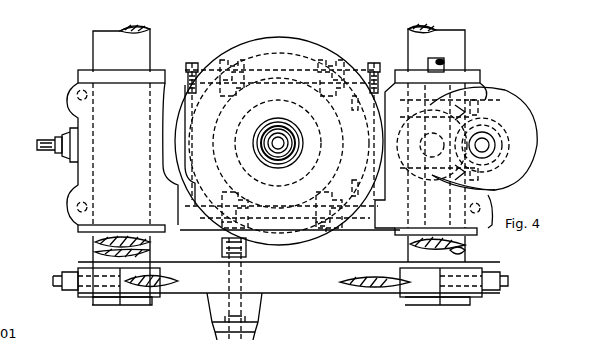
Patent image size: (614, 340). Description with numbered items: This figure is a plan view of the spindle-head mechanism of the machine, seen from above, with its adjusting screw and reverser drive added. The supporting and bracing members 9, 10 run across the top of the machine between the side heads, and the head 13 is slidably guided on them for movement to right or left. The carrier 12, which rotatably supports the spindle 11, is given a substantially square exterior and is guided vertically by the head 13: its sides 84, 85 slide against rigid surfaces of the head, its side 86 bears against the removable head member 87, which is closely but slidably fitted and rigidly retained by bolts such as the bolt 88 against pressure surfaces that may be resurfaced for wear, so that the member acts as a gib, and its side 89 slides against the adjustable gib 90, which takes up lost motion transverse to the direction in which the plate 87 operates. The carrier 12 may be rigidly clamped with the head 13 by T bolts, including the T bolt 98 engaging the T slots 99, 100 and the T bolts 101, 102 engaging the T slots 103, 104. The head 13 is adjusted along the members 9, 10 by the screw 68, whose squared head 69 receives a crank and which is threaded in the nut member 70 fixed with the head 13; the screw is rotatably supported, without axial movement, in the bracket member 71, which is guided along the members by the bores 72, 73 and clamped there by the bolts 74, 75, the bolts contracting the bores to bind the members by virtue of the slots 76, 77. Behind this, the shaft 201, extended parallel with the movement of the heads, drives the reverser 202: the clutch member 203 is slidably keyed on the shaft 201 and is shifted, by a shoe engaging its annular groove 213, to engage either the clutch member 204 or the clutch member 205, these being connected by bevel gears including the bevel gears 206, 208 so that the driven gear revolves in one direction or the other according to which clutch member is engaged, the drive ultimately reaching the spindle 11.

The supporting and bracing member 9 is at (93, 243).
The supporting and bracing member 10 is at (466, 243).
The spindle 11 is at (268, 150).
The carrier 12 is at (277, 93).
The head 13 is at (176, 231).
The screw 68 is at (241, 281).
The squared head 69 is at (213, 335).
The nut member 70 is at (222, 246).
The bracket member 71 is at (322, 294).
The bore 72 is at (165, 277).
The bore 73 is at (405, 280).
The bolt 74 is at (58, 282).
The bolt 75 is at (502, 285).
The slot 76 is at (121, 306).
The slot 77 is at (441, 306).
The side of carrier 84 is at (277, 212).
The side of carrier 85 is at (200, 190).
The side of carrier 86 is at (342, 80).
The removable head member 87 is at (278, 72).
The bolt 88 is at (193, 63).
The side of carrier 89 is at (355, 195).
The adjustable gib 90 is at (374, 228).
The T bolt 98 is at (315, 232).
The T slot 99 is at (240, 196).
The T slot 100 is at (318, 200).
The T bolt 101 is at (236, 64).
The T bolt 102 is at (338, 62).
The T slot 103 is at (232, 97).
The T slot 104 is at (318, 95).
The shaft 201 is at (437, 58).
The reverser 202 is at (420, 137).
The clutch member 203 is at (498, 148).
The clutch member 204 is at (500, 189).
The clutch member 205 is at (504, 92).
The bevel gear 206 is at (486, 170).
The bevel gear 208 is at (480, 112).
The annular groove 213 is at (498, 134).